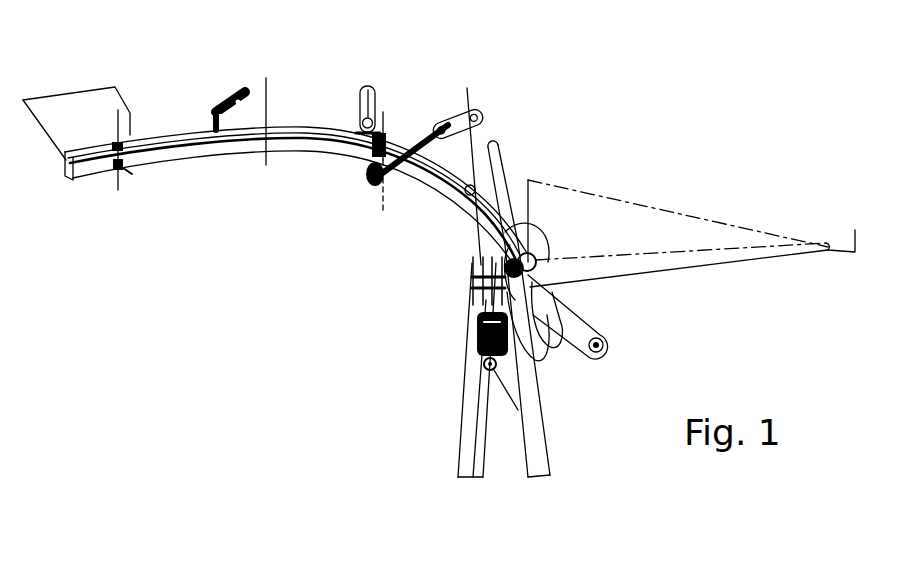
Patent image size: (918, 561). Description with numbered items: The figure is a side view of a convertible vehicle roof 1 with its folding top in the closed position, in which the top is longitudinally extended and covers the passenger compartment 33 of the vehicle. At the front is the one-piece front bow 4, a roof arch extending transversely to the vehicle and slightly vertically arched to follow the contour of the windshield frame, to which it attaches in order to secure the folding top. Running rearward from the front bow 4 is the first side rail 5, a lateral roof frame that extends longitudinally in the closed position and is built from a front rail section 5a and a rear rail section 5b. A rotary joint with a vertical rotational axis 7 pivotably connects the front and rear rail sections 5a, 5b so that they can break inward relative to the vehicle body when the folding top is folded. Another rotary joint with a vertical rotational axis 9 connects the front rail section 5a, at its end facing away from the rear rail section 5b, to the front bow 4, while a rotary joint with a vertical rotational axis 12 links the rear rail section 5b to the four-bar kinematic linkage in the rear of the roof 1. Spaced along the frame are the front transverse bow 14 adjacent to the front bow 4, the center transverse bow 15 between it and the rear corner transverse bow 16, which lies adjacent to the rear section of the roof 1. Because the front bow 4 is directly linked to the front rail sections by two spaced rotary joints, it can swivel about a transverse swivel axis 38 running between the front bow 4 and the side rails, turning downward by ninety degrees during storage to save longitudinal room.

The convertible vehicle roof 1 is at (482, 50).
The front bow 4 is at (73, 106).
The first side rail 5 is at (237, 152).
The front rail section 5a is at (167, 130).
The rear rail section 5b is at (315, 156).
The z-parallel rotational axis 7 is at (270, 108).
The z-parallel rotational axis 9 is at (117, 181).
The z-parallel rotational axis 12 is at (388, 126).
The front transverse bow 14 is at (233, 97).
The center transverse bow 15 is at (362, 88).
The rear corner transverse bow 16 is at (480, 114).
The passenger compartment 33 is at (240, 310).
The y-parallel swivel axis 38 is at (130, 171).